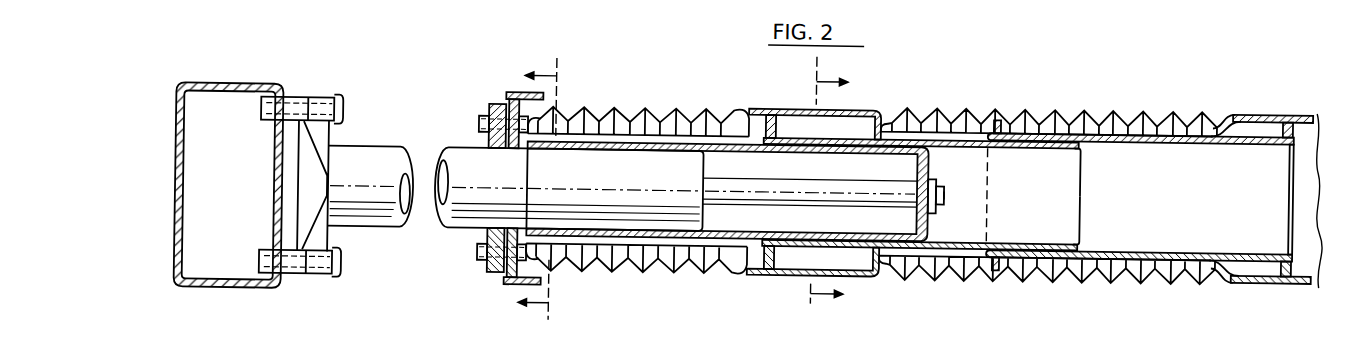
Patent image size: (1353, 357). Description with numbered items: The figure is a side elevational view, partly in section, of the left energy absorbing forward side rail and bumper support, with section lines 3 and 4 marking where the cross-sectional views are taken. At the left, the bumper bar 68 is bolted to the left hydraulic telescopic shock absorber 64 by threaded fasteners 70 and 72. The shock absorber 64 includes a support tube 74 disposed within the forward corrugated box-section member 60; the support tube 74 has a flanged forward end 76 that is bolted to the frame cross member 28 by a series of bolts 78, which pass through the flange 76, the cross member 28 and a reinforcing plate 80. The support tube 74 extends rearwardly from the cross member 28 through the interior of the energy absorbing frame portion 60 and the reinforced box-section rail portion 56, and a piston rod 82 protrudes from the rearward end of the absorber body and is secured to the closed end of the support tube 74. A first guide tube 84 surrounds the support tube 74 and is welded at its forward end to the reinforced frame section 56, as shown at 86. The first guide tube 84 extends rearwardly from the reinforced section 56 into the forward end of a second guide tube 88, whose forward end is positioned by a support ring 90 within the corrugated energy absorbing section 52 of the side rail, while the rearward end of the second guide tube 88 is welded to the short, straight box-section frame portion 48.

The frame cross member 28 is at (513, 101).
The frame portion 48 is at (1281, 107).
The corrugated section 52 is at (1082, 114).
The reinforced box-section rail portion 56 is at (796, 275).
The forward corrugated box-section member 60 is at (706, 110).
The hydraulic telescopic shock absorber 64 is at (385, 149).
The bumper bar 68 is at (286, 86).
The threaded fastener 70 is at (345, 113).
The threaded fastener 72 is at (337, 288).
The support tube 74 is at (724, 240).
The flanged forward end 76 is at (502, 274).
The bolts 78 is at (478, 251).
The reinforcing plate 80 is at (489, 120).
The piston rod 82 is at (876, 176).
The first guide tube 84 is at (966, 138).
The weld 86 is at (791, 108).
The second guide tube 88 is at (1143, 138).
The support ring 90 is at (1000, 268).
The section line 3- 3 is at (537, 191).
The section line 4- 4 is at (832, 198).